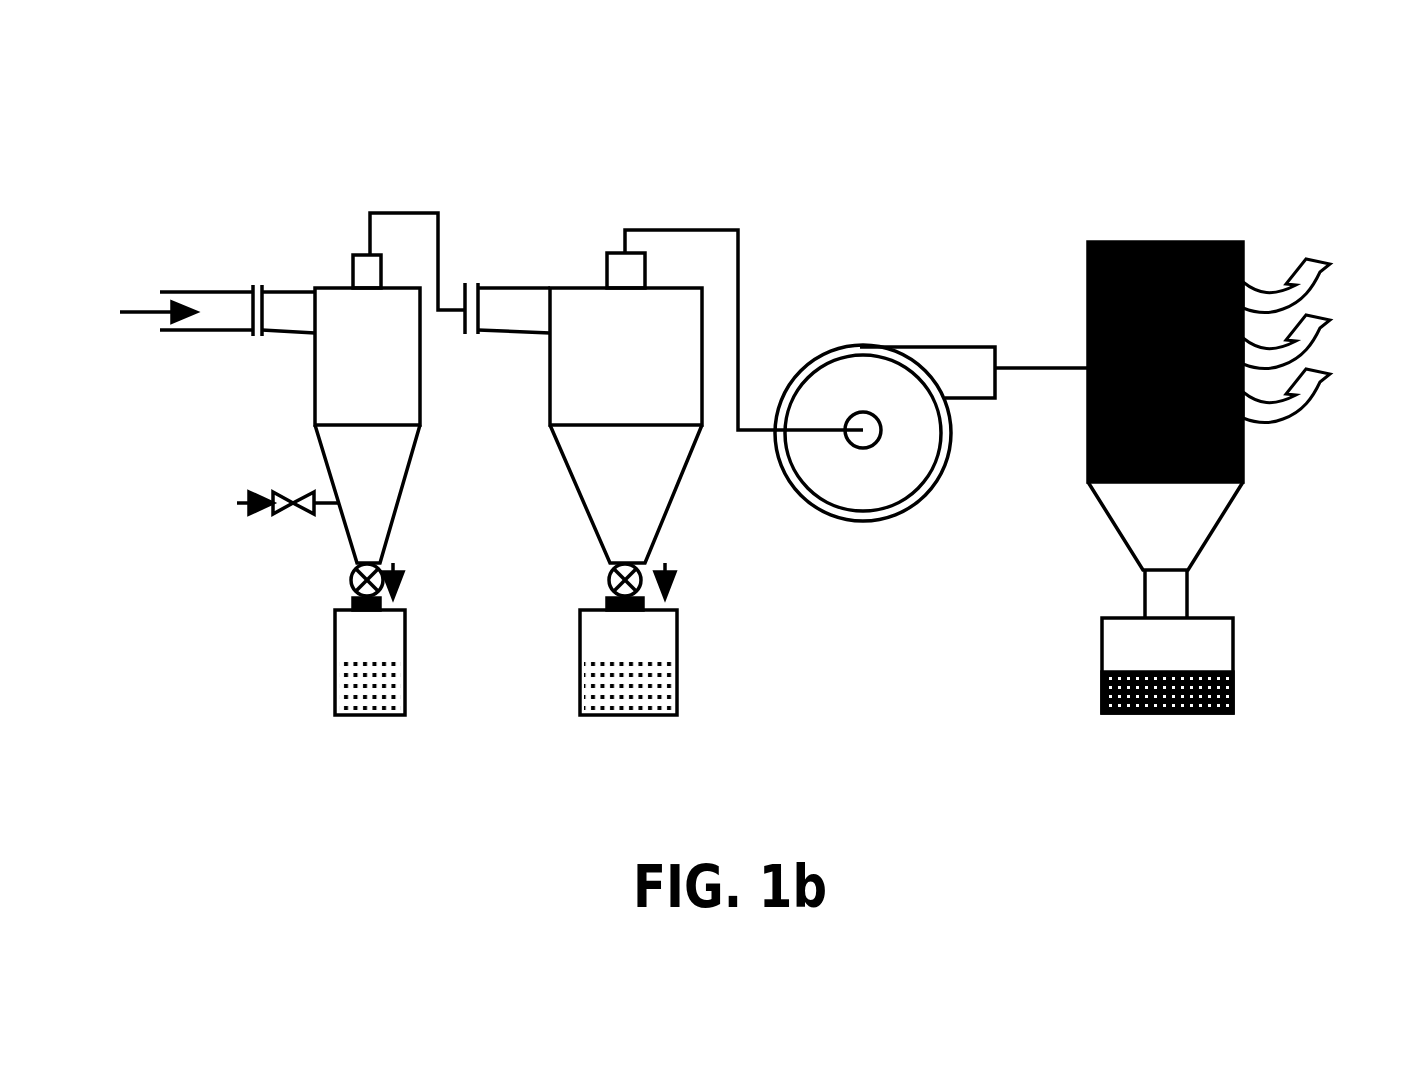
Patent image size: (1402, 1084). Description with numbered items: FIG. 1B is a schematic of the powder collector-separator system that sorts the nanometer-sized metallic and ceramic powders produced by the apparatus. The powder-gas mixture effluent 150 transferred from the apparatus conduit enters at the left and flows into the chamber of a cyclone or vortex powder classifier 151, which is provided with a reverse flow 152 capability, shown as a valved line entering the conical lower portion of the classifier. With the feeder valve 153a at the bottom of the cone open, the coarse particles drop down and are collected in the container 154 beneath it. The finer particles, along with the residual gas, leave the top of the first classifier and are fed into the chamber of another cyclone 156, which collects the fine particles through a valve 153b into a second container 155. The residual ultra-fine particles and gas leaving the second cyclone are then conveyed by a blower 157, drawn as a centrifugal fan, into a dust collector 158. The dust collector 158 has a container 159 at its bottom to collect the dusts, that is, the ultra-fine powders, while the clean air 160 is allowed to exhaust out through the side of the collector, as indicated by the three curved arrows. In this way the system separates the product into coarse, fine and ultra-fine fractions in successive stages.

The powder-gas mixture effluent 150 is at (138, 295).
The cyclone or vortex powder classifier 151 is at (372, 332).
The reverse flow 152 is at (287, 492).
The feeder valve 153a is at (407, 572).
The valve 153b is at (677, 575).
The container 154 is at (373, 682).
The container 155 is at (620, 688).
The cyclone 156 is at (642, 352).
The blower 157 is at (872, 392).
The dust collector 158 is at (1180, 242).
The container 159 is at (1137, 713).
The clean air 160 is at (1275, 310).